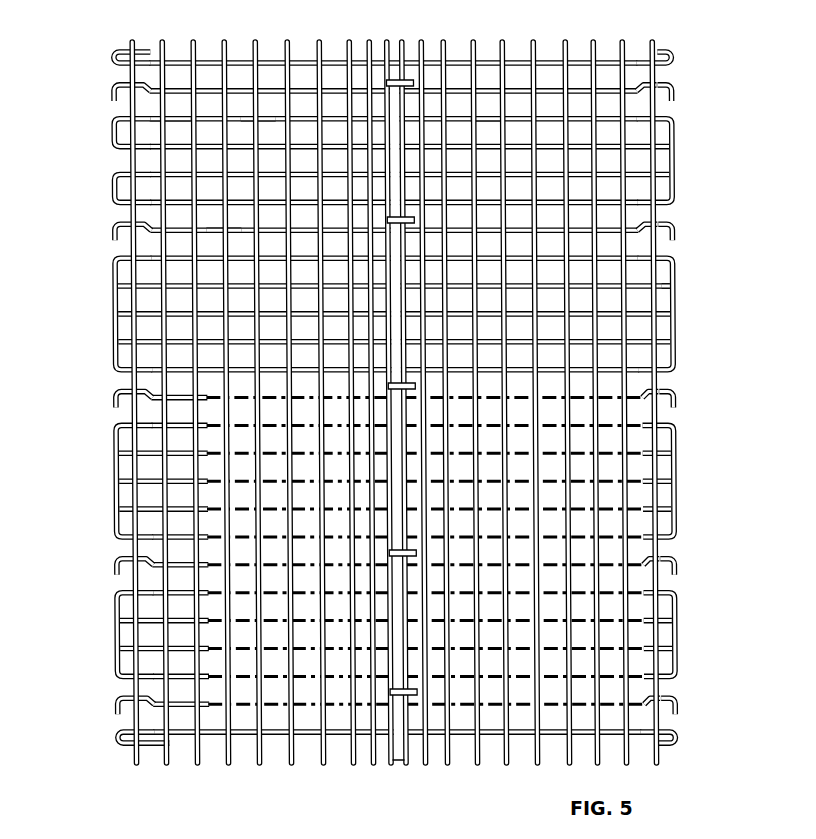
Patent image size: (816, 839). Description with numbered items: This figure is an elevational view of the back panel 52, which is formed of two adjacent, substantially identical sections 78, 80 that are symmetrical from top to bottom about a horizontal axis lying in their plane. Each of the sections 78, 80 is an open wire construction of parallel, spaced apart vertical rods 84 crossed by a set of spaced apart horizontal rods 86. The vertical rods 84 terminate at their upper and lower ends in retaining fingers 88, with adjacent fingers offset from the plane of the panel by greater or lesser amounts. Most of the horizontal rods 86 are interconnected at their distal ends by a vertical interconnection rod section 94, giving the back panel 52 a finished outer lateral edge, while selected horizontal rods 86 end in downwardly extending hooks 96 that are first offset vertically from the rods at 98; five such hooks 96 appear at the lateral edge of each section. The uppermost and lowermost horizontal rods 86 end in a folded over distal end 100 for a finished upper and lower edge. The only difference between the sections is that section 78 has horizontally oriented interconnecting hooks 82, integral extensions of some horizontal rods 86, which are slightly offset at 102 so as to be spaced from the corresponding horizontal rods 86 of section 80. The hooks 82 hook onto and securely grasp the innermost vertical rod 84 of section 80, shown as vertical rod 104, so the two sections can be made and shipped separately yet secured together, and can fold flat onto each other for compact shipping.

The back panel 52 is at (391, 408).
The section 78 is at (391, 408).
The section 80 is at (684, 252).
The interconnecting hooks 82 is at (400, 80).
The vertical rods 84 is at (130, 170).
The horizontal rods 86 is at (150, 119).
The retaining fingers 88 is at (226, 45).
The vertical interconnection rod section 94 is at (113, 135).
The downwardly extending hooks 96 is at (117, 84).
The offset 98 is at (118, 50).
The folded over distal end 100 is at (139, 50).
The offset 102 is at (383, 218).
The vertical rod 104 is at (410, 745).